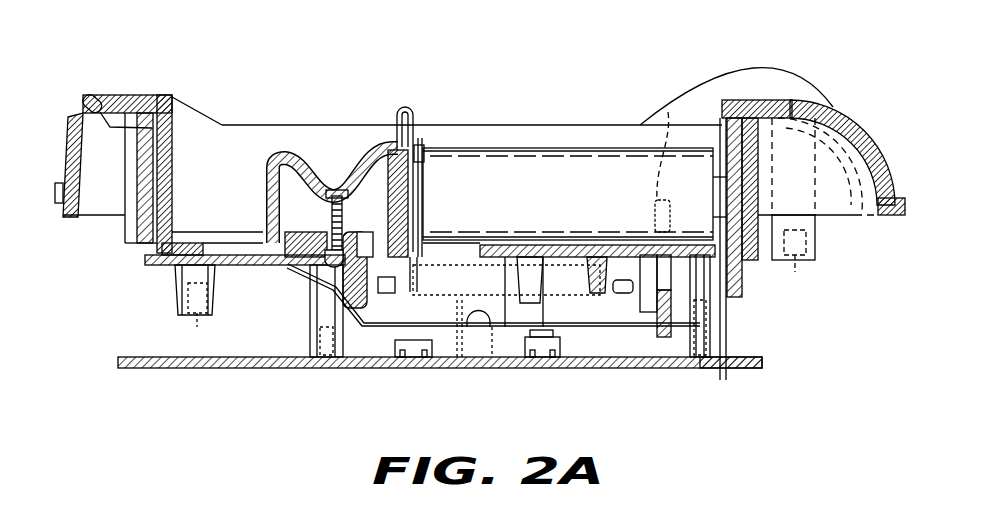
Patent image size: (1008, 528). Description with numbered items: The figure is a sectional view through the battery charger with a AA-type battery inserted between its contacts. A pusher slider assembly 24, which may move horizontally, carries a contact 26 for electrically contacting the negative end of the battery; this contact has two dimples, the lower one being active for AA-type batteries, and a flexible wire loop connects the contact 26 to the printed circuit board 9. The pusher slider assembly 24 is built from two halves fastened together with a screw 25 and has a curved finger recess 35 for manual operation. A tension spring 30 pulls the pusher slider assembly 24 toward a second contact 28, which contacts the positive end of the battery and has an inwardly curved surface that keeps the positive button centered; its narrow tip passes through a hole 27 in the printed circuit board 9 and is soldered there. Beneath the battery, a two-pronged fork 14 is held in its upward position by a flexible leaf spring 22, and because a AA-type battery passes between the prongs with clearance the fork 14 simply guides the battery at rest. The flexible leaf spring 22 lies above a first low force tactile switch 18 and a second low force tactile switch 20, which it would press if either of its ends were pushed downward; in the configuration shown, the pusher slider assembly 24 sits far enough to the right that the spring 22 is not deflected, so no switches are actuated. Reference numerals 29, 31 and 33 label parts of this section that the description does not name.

The printed circuit board 9 is at (142, 367).
The two-pronged fork 14 is at (658, 160).
The first low force tactile switch 18 is at (548, 362).
The second low force tactile switch 20 is at (413, 358).
The flexible leaf spring 22 is at (615, 312).
The pusher slider assembly 24 is at (250, 126).
The screw 25 is at (323, 190).
The contact 26 is at (403, 108).
The hole 27 is at (728, 355).
The second contact 28 is at (742, 112).
The support plate 29 is at (728, 315).
The tension spring 30 is at (420, 292).
The battery compartment 31 is at (423, 220).
The contact plate 33 is at (425, 142).
The curved finger recess 35 is at (362, 190).